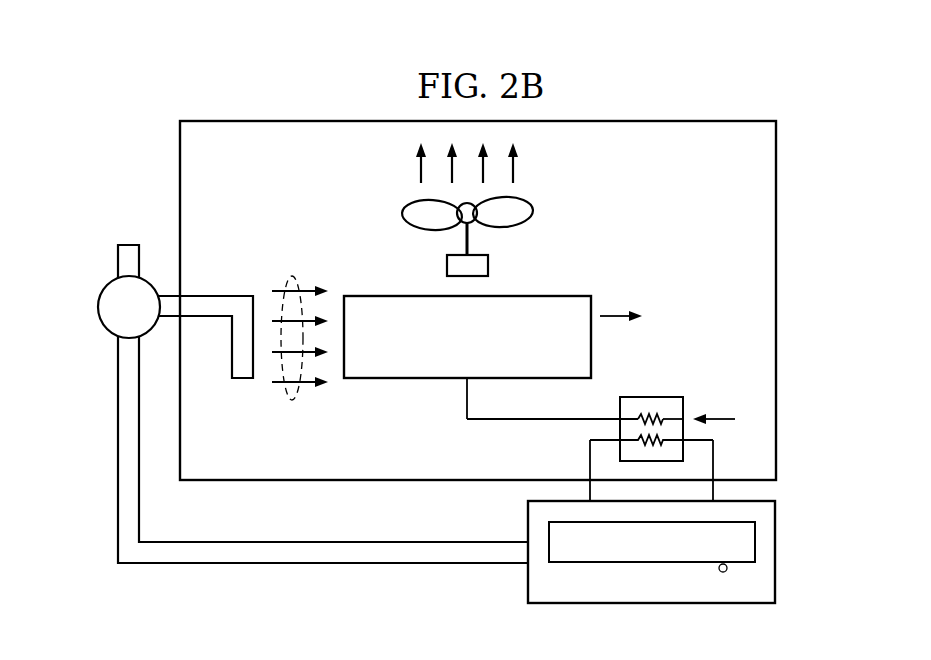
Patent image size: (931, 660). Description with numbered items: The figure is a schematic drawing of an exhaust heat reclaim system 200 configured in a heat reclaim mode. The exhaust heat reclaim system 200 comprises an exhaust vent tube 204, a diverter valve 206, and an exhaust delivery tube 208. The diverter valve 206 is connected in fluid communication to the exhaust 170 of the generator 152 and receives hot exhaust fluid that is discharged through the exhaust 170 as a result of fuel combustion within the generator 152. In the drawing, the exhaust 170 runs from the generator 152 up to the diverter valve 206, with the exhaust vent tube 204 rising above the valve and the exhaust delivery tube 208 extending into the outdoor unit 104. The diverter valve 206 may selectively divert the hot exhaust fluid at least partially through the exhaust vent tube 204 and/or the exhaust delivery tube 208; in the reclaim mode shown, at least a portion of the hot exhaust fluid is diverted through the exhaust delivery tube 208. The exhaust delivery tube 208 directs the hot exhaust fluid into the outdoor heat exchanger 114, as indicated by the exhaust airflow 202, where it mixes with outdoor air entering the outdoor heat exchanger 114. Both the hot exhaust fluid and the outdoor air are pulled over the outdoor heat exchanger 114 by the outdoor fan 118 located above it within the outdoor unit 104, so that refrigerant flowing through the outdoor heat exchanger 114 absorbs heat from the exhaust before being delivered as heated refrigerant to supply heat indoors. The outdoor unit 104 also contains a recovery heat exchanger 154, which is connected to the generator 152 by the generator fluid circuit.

The exhaust heat reclaim system 200 is at (92, 89).
The outdoor unit 104 is at (657, 114).
The outdoor fan 118 is at (405, 213).
The outdoor heat exchanger 114 is at (548, 295).
The recovery heat exchanger 154 is at (653, 397).
The generator 152 is at (777, 556).
The exhaust 170 is at (302, 564).
The exhaust vent tube 204 is at (117, 265).
The diverter valve 206 is at (98, 308).
The exhaust delivery tube 208 is at (222, 295).
The exhaust airflow 202 is at (295, 278).